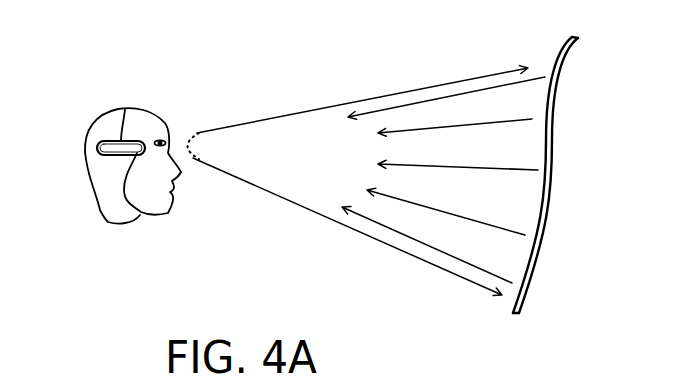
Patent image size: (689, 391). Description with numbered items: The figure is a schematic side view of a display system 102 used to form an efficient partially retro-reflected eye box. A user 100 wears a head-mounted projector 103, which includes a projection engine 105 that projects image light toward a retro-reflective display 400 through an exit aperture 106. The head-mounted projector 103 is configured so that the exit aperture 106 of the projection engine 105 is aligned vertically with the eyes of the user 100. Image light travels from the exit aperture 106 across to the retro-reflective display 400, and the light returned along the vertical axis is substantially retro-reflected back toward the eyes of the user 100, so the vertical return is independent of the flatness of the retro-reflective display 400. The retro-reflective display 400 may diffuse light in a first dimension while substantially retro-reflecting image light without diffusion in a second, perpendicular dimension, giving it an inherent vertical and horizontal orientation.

The user 100 is at (121, 231).
The display system 102 is at (256, 49).
The head-mounted projector 103 is at (119, 92).
The projection engine 105 is at (97, 148).
The exit aperture 106 is at (137, 150).
The retro-reflective display 400 is at (556, 167).